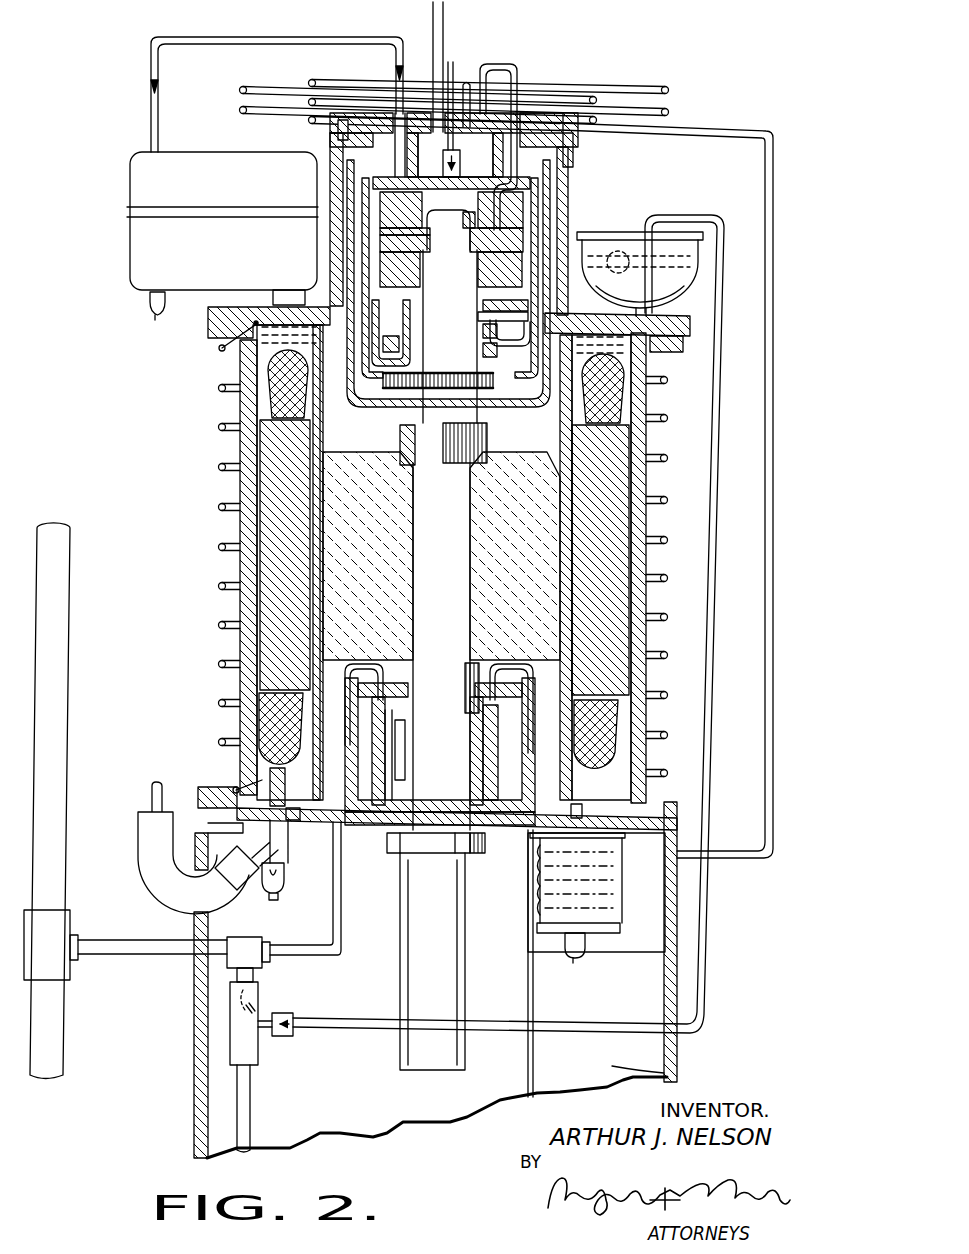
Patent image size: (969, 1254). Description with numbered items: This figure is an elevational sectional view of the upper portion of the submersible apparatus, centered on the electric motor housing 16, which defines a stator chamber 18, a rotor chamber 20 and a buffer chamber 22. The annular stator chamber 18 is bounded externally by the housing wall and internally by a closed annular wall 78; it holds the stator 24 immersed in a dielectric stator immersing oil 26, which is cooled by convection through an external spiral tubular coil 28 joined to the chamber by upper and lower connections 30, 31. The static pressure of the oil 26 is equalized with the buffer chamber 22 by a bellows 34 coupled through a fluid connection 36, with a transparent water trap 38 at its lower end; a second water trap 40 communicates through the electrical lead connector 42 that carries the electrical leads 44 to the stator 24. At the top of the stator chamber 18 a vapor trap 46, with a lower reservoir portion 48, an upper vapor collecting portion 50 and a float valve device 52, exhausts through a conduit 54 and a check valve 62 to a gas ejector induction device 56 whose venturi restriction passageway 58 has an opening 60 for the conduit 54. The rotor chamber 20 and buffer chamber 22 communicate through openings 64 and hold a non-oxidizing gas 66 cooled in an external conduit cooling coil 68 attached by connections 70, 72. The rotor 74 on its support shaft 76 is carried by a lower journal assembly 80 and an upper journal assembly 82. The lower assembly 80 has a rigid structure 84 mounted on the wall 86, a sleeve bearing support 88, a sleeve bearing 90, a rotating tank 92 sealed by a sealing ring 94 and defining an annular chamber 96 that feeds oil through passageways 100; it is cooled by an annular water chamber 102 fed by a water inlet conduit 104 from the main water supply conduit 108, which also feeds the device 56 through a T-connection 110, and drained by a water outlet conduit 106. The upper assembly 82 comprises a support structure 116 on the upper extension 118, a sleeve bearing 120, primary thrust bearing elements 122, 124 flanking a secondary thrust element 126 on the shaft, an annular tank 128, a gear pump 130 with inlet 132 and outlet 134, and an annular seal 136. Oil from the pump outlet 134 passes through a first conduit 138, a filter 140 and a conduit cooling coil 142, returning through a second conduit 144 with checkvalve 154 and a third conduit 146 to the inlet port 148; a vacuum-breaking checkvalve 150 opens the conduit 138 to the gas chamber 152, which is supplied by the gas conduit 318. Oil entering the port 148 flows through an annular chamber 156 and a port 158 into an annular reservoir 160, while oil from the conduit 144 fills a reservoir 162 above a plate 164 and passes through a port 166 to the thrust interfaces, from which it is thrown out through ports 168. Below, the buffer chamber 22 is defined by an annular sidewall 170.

The electric motor housing 16 is at (238, 448).
The stator chamber 18 is at (634, 766).
The rotor chamber 20 is at (568, 188).
The buffer chamber 22 is at (328, 1104).
The stator 24 is at (608, 537).
The stator immersing oil 26 is at (640, 796).
The continuous tubular coil 28 is at (656, 415).
The connection 30 is at (220, 348).
The connection 31 is at (238, 785).
The bellows 34 is at (610, 928).
The fluid connection 36 is at (582, 820).
The water trap 38 is at (580, 958).
The second water trap 40 is at (285, 878).
The electrical lead connector 42 is at (278, 843).
The electrical leads 44 is at (150, 797).
The vapor trap 46 is at (662, 252).
The lower reservoir portion 48 is at (660, 280).
The upper vapor collecting portion 50 is at (598, 235).
The float valve device 52 is at (668, 266).
The conduit 54 is at (720, 345).
The gas ejector induction device 56 is at (232, 1026).
The venturi type restriction passageway 58 is at (252, 990).
The opening 60 is at (258, 1012).
The check valve 62 is at (287, 1037).
The openings 64 is at (355, 735).
The non-oxidizing gas 66 is at (664, 1083).
The conduit cooling coil 68 is at (775, 352).
The connection 70 is at (468, 83).
The connection 72 is at (667, 855).
The rotor 74 is at (494, 573).
The support shaft 76 is at (458, 549).
The closed annular wall 78 is at (318, 553).
The journal assembly 80 is at (368, 827).
The journal assembly 82 is at (383, 407).
The rigid structure 84 is at (480, 687).
The wall 86 is at (292, 820).
The sleeve bearing support 88 is at (492, 705).
The sleeve bearing 90 is at (396, 768).
The tank 92 is at (484, 838).
The sealing ring 94 is at (370, 703).
The annular chamber 96 is at (395, 782).
The passageways 100 is at (395, 732).
The annular water chamber 102 is at (484, 792).
The water inlet conduit 104 is at (338, 935).
The water outlet conduit 106 is at (528, 970).
The main water supply conduit 108 is at (55, 607).
The T-connection 110 is at (243, 944).
The support structure 116 is at (396, 115).
The upper extension 118 is at (575, 147).
The sleeve bearing 120 is at (470, 388).
The primary annular thrust bearing element 122 is at (486, 276).
The primary annular thrust bearing element 124 is at (373, 197).
The secondary annular thrust bearing element 126 is at (395, 242).
The annular tank 128 is at (485, 407).
The gear pump 130 is at (392, 333).
The inlet 132 is at (482, 370).
The outlet 134 is at (392, 347).
The annular seal 136 is at (336, 147).
The first conduit 138 is at (266, 36).
The filter 140 is at (130, 188).
The conduit cooling coil 142 is at (338, 82).
The second conduit 144 is at (456, 94).
The third conduit 146 is at (490, 352).
The inlet port 148 is at (492, 334).
The vacuum-breaking checkvalve 150 is at (428, 114).
The gas chamber 152 is at (455, 191).
The checkvalve 154 is at (469, 153).
The annular chamber 156 is at (494, 317).
The port 158 is at (492, 307).
The annular reservoir 160 is at (412, 274).
The reservoir 162 is at (504, 140).
The plate 164 is at (503, 210).
The port 166 is at (404, 210).
The ports 168 is at (380, 231).
The annular sidewall 170 is at (673, 1070).
The conduit 318 is at (444, 22).